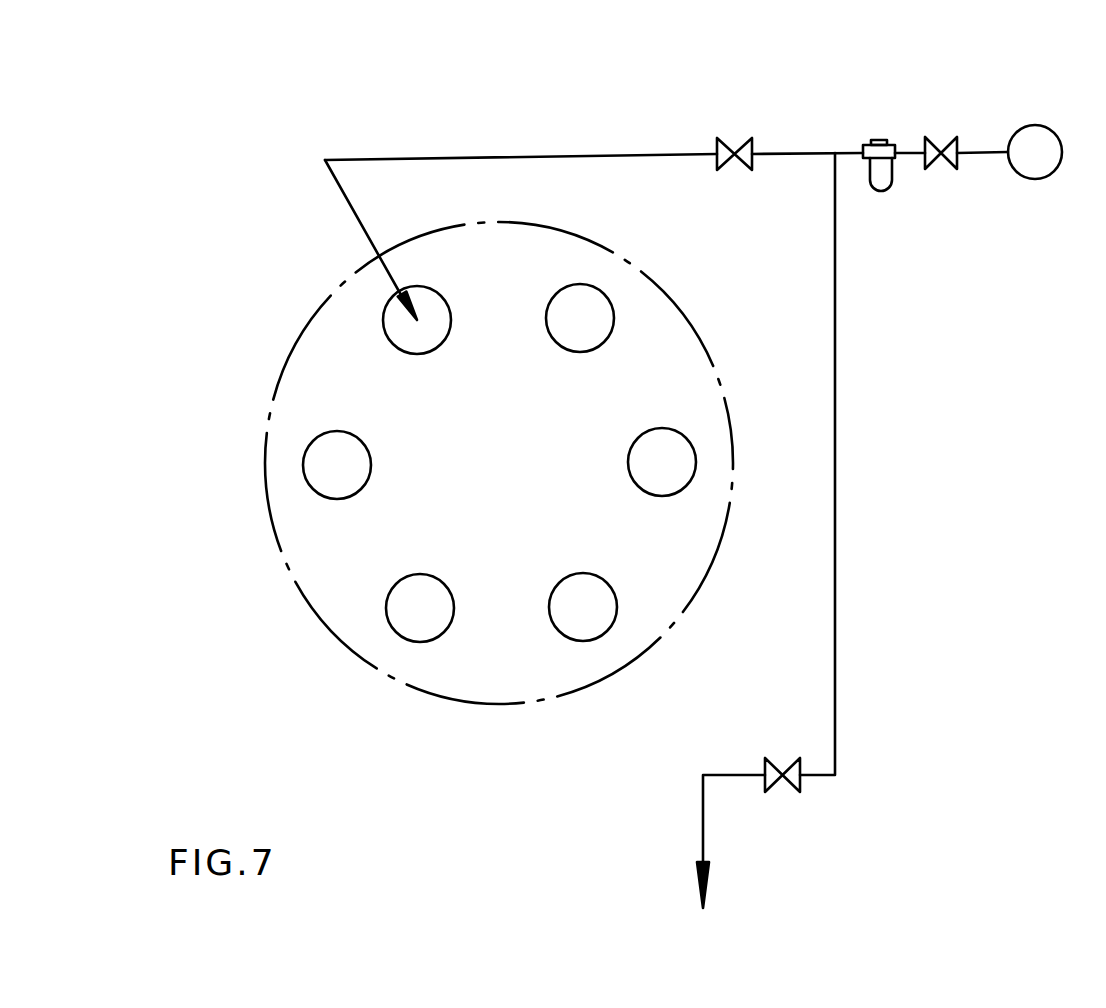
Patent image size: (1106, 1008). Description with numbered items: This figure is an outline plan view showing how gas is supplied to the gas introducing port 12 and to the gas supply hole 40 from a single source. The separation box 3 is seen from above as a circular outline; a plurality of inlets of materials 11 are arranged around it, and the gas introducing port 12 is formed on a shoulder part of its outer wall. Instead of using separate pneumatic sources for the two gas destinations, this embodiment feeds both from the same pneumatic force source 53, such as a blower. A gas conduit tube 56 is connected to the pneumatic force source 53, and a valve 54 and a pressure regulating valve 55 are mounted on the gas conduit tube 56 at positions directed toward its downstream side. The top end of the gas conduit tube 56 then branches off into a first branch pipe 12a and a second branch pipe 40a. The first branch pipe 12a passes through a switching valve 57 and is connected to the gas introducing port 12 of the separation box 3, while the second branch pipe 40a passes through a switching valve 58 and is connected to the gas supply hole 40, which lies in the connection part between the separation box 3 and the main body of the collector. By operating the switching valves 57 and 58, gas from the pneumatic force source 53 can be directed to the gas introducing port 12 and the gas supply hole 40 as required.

The separation box 3 is at (265, 575).
The inlets of materials 11 is at (605, 320).
The gas introducing port 12 is at (397, 327).
The first branch pipe 12a is at (465, 158).
The gas supply hole 40 is at (700, 852).
The second branch pipe 40a is at (835, 637).
The pneumatic force source 53 is at (1043, 177).
The valve 54 is at (947, 147).
The pressure regulating valve 55 is at (880, 147).
The gas conduit tube 56 is at (983, 155).
The switching valve 57 is at (730, 147).
The switching valve 58 is at (777, 783).